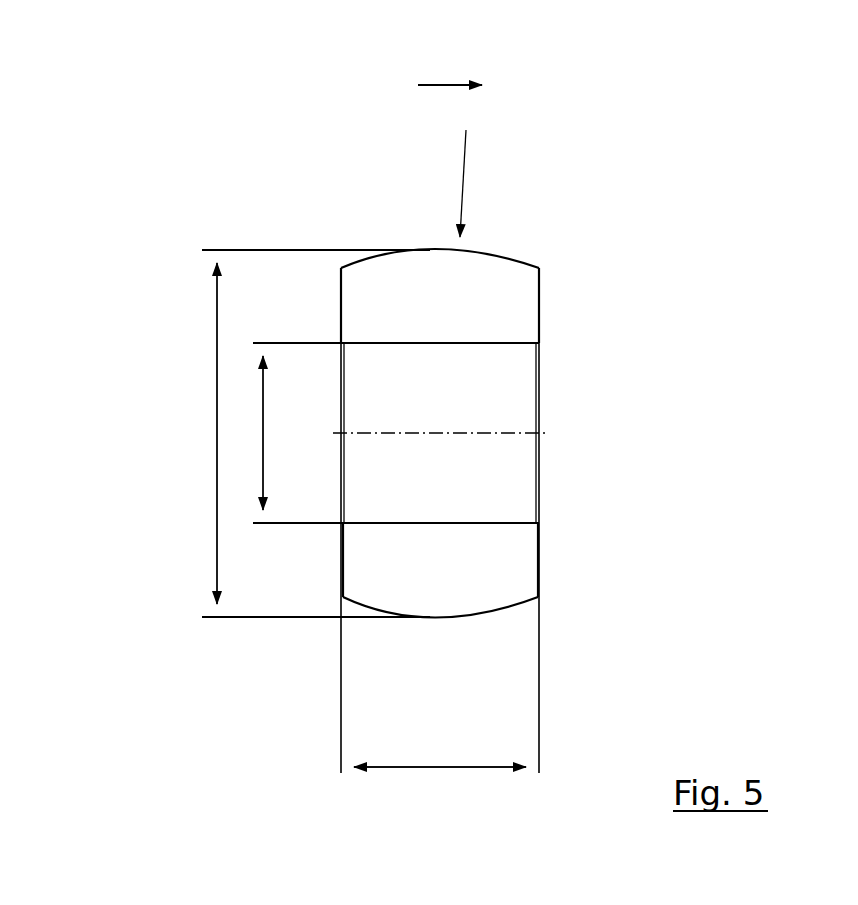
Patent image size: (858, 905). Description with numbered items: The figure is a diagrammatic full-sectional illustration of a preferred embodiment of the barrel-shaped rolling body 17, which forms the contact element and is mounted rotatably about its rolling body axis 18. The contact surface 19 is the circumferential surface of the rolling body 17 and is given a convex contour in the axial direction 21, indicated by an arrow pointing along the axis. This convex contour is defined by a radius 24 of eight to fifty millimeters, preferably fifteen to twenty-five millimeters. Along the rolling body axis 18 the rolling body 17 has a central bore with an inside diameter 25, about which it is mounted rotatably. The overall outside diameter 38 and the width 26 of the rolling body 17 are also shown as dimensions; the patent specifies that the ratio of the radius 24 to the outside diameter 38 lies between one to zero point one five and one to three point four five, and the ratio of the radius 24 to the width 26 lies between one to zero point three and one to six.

The rolling body 17 is at (487, 293).
The rolling body axis 18 is at (512, 433).
The contact surface 19 is at (510, 237).
The axial direction 21 is at (452, 85).
The radius 24 is at (466, 175).
The inside diameter 25 is at (262, 405).
The width 26 is at (392, 767).
The outside diameter 38 is at (217, 470).